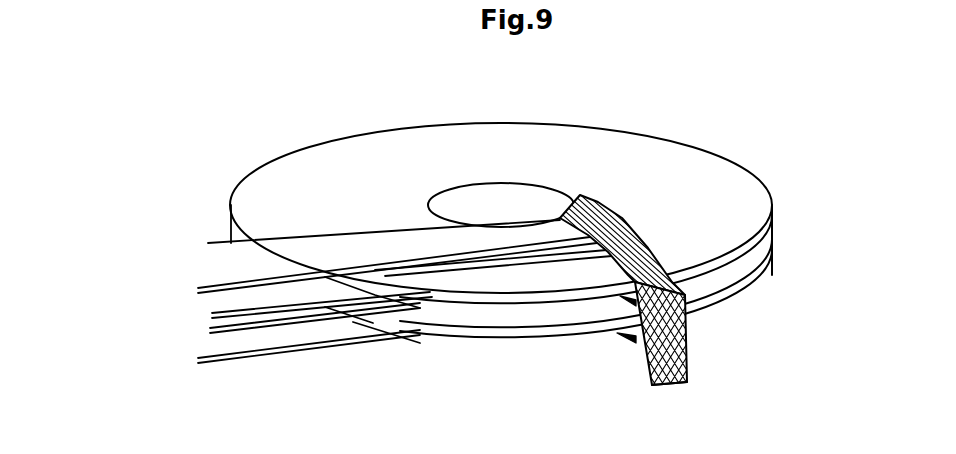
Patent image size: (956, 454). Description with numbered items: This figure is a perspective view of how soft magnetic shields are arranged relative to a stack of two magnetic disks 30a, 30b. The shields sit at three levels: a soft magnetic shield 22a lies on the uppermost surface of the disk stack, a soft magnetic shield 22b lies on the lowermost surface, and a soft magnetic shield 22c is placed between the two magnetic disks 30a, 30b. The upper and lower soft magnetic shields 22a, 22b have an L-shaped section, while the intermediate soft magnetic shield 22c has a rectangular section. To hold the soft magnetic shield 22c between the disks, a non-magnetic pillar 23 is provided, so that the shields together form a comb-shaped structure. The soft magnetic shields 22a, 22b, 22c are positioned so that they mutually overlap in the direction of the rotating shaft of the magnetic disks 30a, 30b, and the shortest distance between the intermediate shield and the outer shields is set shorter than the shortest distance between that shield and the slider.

The magnetic disk 30a is at (677, 155).
The magnetic disk 30b is at (753, 287).
The soft magnetic shield 22a is at (642, 227).
The soft magnetic shield 22b is at (630, 338).
The soft magnetic shield 22c is at (620, 310).
The non-magnetic pillar 23 is at (698, 357).